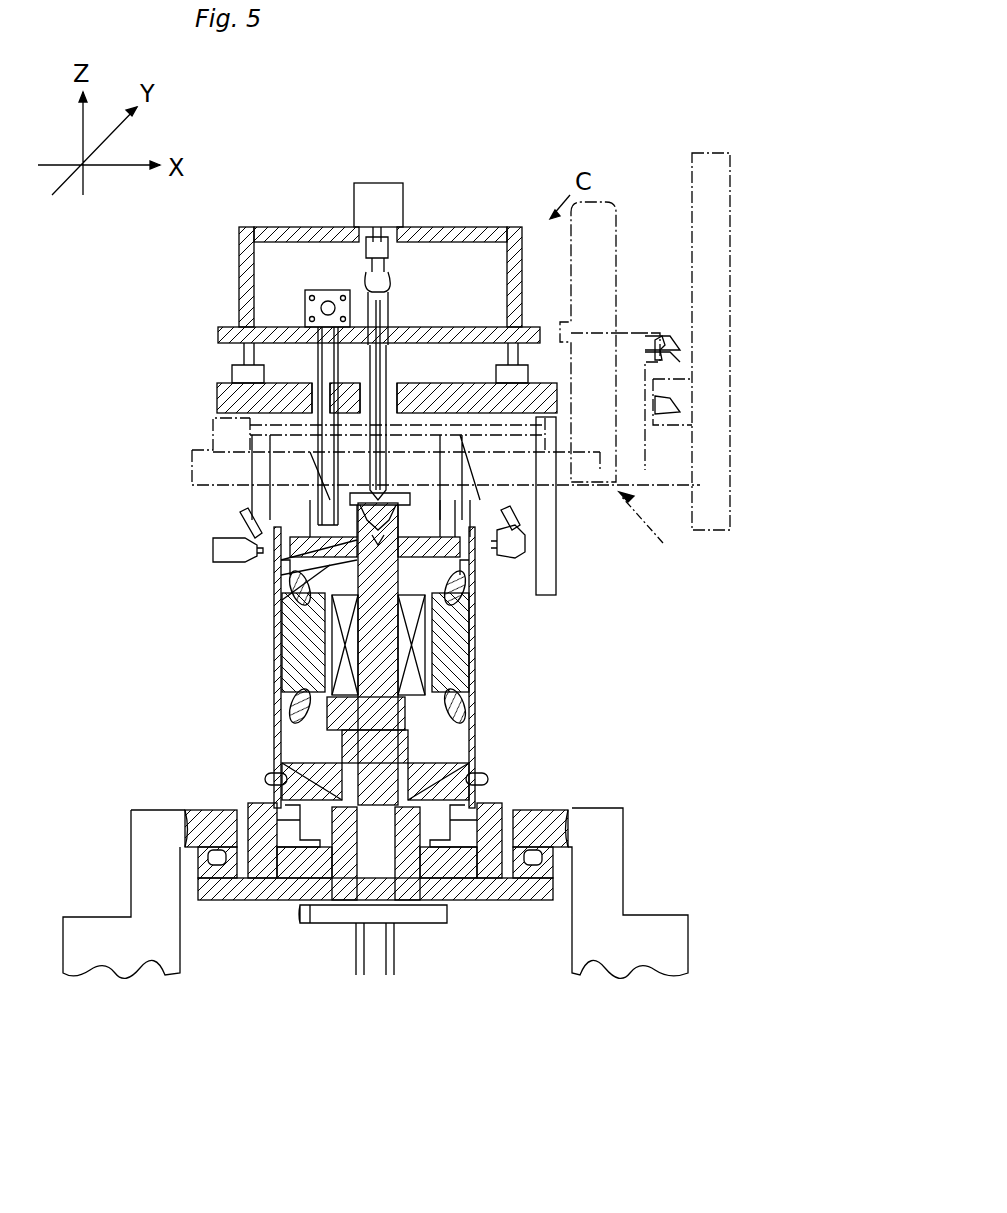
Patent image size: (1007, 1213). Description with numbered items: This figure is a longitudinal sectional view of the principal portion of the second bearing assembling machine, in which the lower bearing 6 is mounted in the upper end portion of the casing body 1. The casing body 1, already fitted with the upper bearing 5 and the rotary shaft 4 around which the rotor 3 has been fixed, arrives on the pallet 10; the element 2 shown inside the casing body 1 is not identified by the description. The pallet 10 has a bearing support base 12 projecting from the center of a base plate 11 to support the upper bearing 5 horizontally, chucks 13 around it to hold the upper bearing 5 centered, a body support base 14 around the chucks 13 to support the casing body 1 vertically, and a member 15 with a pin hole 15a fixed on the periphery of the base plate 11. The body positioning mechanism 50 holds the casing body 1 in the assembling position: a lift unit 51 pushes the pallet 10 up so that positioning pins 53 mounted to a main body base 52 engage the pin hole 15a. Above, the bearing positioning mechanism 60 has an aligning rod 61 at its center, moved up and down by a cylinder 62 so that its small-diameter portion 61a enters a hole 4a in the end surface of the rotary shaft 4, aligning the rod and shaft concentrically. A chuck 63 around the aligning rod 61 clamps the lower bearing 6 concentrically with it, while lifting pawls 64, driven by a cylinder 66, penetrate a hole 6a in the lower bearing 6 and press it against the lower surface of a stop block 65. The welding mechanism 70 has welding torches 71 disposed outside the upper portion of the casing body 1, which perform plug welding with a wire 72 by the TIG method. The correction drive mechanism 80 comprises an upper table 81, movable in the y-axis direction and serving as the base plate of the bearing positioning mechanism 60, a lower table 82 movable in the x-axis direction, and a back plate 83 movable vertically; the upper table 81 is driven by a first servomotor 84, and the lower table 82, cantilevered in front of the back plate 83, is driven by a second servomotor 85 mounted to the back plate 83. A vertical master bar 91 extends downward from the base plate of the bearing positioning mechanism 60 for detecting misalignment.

The casing body 1 is at (300, 598).
The stator 2 is at (470, 670).
The rotor 3 is at (420, 634).
The rotary shaft 4 is at (400, 723).
The hole 4a is at (282, 650).
The upper bearing 5 is at (300, 785).
The lower bearing 6 is at (310, 565).
The hole 6a is at (285, 612).
The pallet 10 is at (375, 920).
The base plate 11 is at (252, 900).
The bearing support base 12 is at (335, 870).
The chucks 13 is at (470, 812).
The body support base 14 is at (260, 805).
The member 15 is at (205, 865).
The pin hole 15a is at (218, 870).
The body positioning mechanism 50 is at (389, 888).
The lift unit 51 is at (406, 959).
The main body base 52 is at (655, 930).
The positioning pins 53 is at (215, 852).
The bearing positioning mechanism 60 is at (220, 292).
The aligning rod 61 is at (420, 345).
The small-diameter portion 61a is at (440, 500).
The cylinder 62 is at (388, 192).
The chuck 63 is at (340, 500).
The lifting pawls 64 is at (350, 545).
The stop block 65 is at (372, 518).
The cylinder 66 is at (326, 290).
The welding mechanism 70 is at (346, 559).
The welding torches 71 is at (393, 554).
The wire 72 is at (245, 535).
The correction drive mechanism 80 is at (670, 543).
The upper table 81 is at (217, 396).
The lower table 82 is at (192, 462).
The back plate 83 is at (720, 285).
The first servomotor 84 is at (608, 210).
The second servomotor 85 is at (690, 385).
The vertical master bar 91 is at (556, 585).